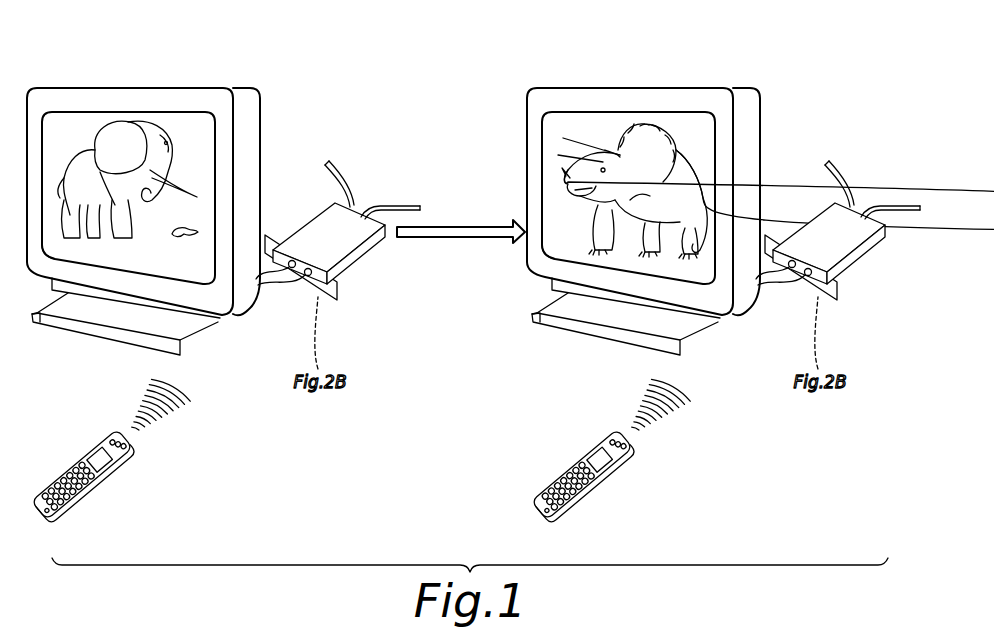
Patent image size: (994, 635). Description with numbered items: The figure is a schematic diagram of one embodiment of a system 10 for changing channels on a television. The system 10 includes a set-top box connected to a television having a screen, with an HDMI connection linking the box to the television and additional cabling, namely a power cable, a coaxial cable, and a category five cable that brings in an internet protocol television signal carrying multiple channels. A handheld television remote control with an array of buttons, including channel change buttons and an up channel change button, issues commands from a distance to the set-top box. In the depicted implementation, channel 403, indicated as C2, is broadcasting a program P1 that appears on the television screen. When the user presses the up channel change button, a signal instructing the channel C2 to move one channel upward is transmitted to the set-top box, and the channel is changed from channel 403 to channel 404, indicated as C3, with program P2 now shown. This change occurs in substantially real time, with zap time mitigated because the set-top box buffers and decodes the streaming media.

The system for changing channels 10 is at (413, 416).
The program P1 is at (81, 126).
The program P2 is at (766, 132).
The channel C2 is at (33, 285).
The channel C3 is at (624, 325).
The channel 403 is at (33, 285).
The channel 404 is at (560, 261).